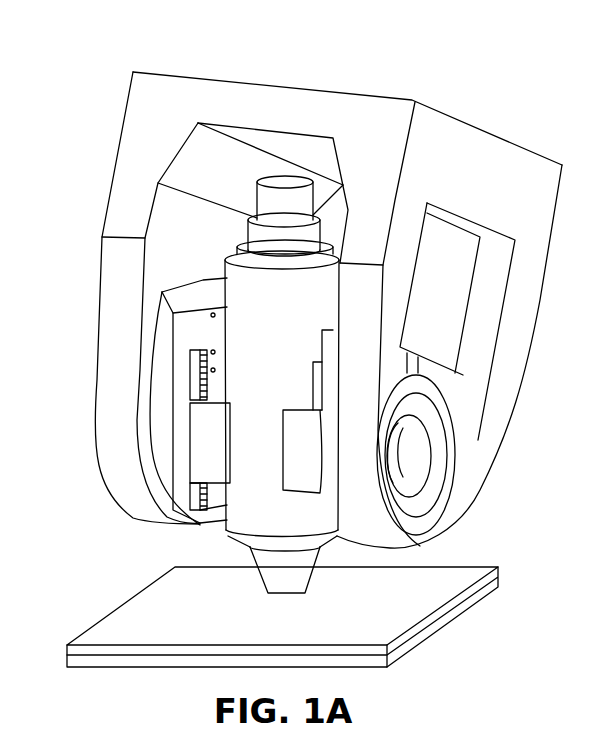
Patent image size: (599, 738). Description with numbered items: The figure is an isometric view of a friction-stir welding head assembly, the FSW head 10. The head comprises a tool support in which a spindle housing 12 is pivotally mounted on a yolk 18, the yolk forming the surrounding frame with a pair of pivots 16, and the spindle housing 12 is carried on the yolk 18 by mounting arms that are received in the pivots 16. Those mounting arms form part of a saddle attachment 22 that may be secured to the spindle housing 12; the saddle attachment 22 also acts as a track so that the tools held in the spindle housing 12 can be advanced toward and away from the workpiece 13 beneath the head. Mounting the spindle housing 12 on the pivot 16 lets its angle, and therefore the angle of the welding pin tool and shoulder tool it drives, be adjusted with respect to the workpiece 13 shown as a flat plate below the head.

The FSW head 10 is at (291, 333).
The spindle housing 12 is at (285, 292).
The workpiece 13 is at (387, 608).
The pivot 16 is at (432, 445).
The yolk 18 is at (115, 388).
The saddle attachment 22 is at (213, 330).